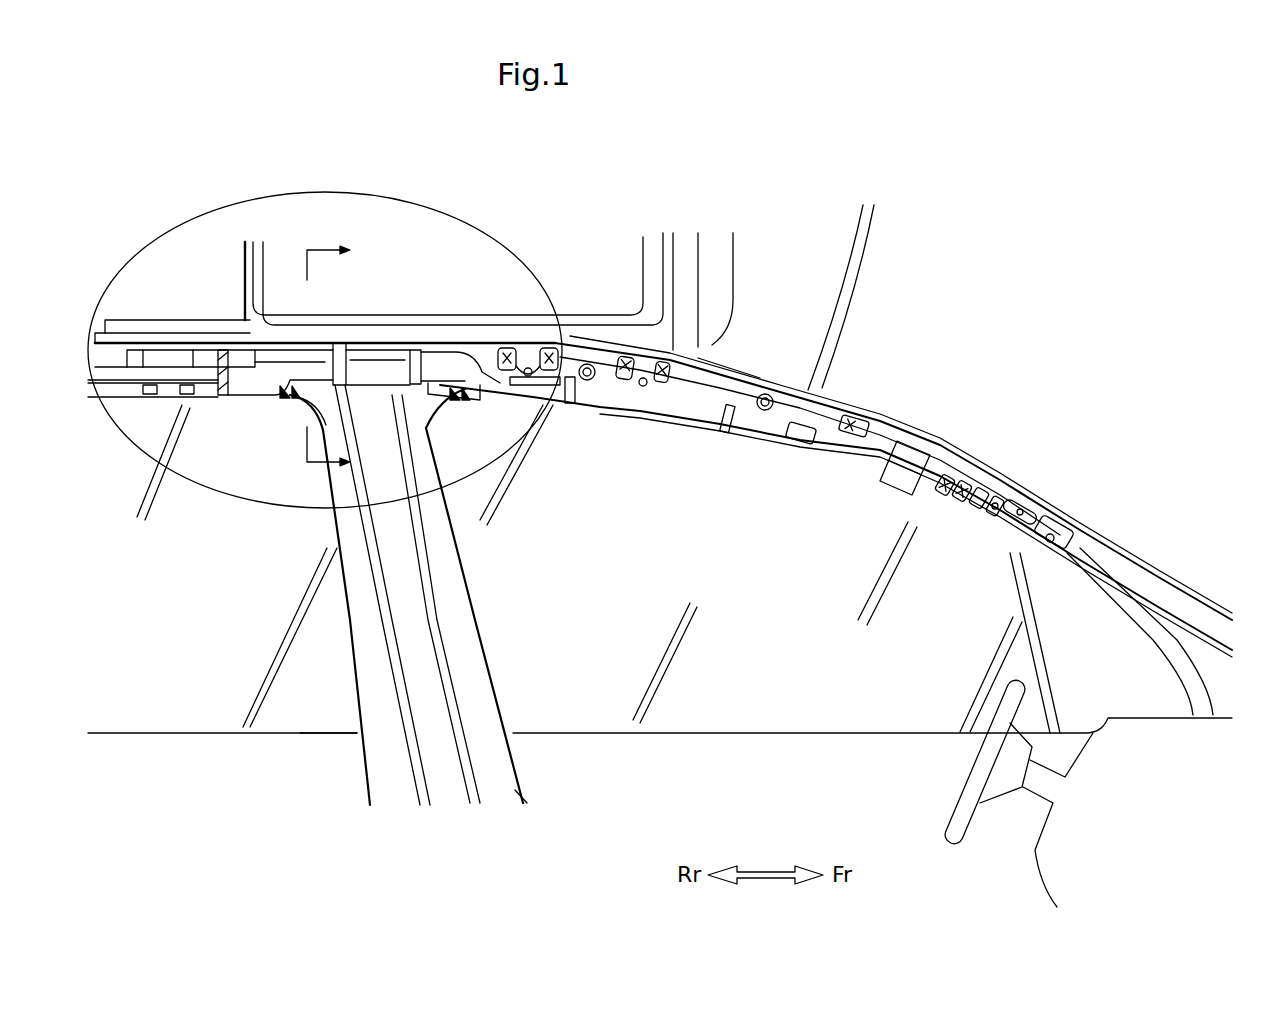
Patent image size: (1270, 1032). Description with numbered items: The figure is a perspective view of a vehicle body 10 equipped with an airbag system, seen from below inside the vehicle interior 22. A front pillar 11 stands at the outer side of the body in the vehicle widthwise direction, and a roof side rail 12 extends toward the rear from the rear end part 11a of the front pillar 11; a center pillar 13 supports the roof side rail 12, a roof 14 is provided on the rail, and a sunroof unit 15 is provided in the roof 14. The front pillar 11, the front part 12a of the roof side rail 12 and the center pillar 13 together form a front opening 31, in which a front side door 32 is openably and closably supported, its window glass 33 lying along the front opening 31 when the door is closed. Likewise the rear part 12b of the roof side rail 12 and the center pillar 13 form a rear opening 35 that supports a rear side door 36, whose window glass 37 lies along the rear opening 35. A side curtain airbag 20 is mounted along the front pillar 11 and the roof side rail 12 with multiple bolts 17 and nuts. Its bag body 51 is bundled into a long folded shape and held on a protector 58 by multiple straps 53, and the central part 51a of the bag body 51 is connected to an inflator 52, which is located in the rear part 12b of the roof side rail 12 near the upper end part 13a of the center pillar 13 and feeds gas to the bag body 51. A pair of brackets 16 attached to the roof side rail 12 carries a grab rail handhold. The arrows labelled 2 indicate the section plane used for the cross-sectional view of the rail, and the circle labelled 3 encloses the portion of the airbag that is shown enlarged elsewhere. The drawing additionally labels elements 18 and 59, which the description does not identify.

The section line II-II 2 is at (322, 358).
The enlarged region of FIG. 3 is at (467, 225).
The vehicle body 10 is at (962, 268).
The front pillar 11 is at (1027, 487).
The rear end part 11a is at (805, 417).
The roof side rail 12 is at (480, 360).
The front part 12a is at (698, 358).
The rear part 12b is at (213, 350).
The center pillar 13 is at (367, 693).
The upper end part 13a is at (328, 428).
The roof 14 is at (763, 252).
The sunroof unit 15 is at (552, 270).
The brackets 16 is at (603, 400).
The bolts 17 is at (583, 367).
The headlining 18 is at (498, 250).
The side curtain airbag 20 is at (645, 305).
The vehicle interior 22 is at (594, 649).
The front opening 31 is at (465, 580).
The front side door 32 is at (543, 787).
The window glass 33 is at (667, 685).
The rear opening 35 is at (340, 590).
The rear side door 36 is at (313, 770).
The window glass 37 is at (163, 477).
The bag body 51 is at (440, 395).
The central part 51a is at (257, 393).
The inflator 52 is at (168, 358).
The straps 53 is at (222, 398).
The protector 58 is at (376, 338).
The rear fixing member 59 is at (308, 352).